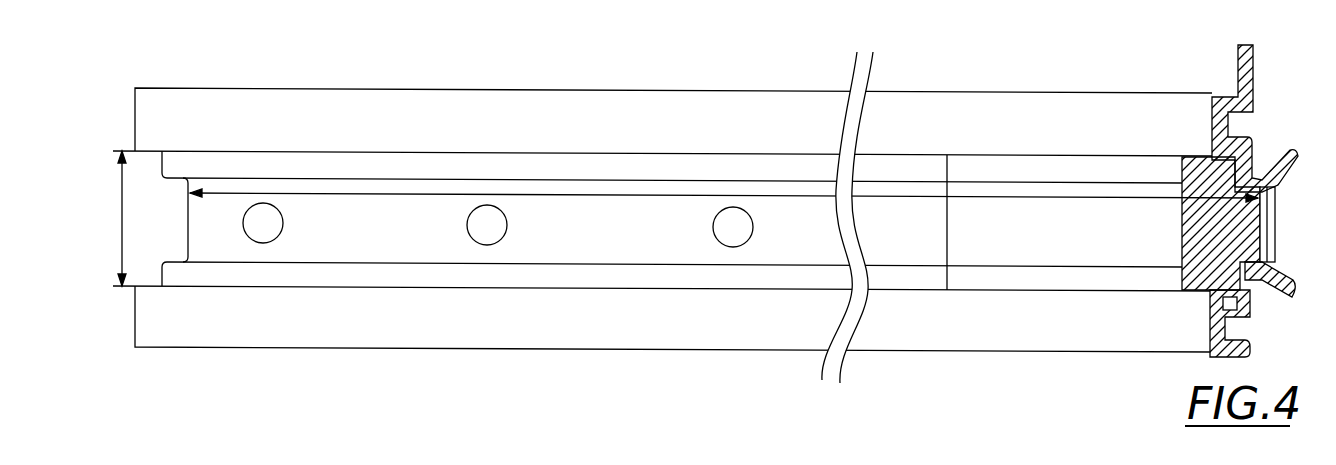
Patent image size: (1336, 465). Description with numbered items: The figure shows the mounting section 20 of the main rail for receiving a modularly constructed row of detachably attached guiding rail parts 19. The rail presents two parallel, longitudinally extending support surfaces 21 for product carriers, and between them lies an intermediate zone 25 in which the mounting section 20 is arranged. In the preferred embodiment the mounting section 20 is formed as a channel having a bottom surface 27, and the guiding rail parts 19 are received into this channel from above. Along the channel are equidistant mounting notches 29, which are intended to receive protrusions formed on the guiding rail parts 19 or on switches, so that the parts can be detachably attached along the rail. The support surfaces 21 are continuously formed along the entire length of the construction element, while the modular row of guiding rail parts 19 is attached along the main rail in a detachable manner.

The guiding rail parts 19 is at (1068, 232).
The mounting section 20 is at (679, 197).
The support surfaces 21 is at (575, 320).
The intermediate zone 25 is at (155, 226).
The bottom surface 27 is at (383, 230).
The mounting notches 29 is at (264, 212).